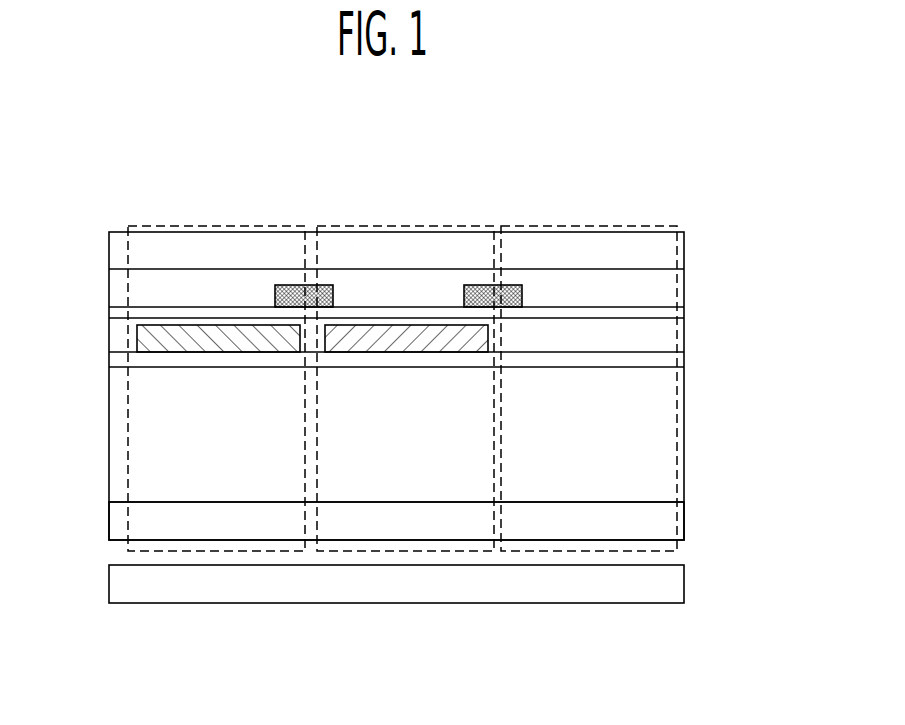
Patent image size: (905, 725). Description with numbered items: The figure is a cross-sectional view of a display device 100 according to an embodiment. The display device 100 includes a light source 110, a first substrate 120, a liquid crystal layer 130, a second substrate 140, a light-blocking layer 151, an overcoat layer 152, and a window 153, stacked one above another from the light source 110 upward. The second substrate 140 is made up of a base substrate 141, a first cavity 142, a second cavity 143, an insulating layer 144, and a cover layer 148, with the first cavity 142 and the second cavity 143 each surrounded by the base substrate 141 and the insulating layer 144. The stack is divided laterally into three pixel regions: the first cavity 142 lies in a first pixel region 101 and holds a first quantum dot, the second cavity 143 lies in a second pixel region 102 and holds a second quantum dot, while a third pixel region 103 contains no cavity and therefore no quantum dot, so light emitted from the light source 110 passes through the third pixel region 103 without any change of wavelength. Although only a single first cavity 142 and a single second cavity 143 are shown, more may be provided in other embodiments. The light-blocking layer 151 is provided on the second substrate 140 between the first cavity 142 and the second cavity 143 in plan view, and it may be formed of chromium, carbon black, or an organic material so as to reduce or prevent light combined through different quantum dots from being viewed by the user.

The display device 100 is at (123, 133).
The first pixel region 101 is at (213, 552).
The second pixel region 102 is at (405, 552).
The third pixel region 103 is at (587, 552).
The light source 110 is at (684, 591).
The first substrate 120 is at (684, 526).
The liquid crystal layer 130 is at (684, 451).
The second substrate 140 is at (418, 190).
The base substrate 141 is at (122, 362).
The first cavity 142 is at (219, 335).
The second cavity 143 is at (382, 335).
The insulating layer 144 is at (345, 322).
The cover layer 148 is at (263, 313).
The light-blocking layer 151 is at (475, 300).
The overcoat layer 152 is at (684, 283).
The window 153 is at (684, 246).